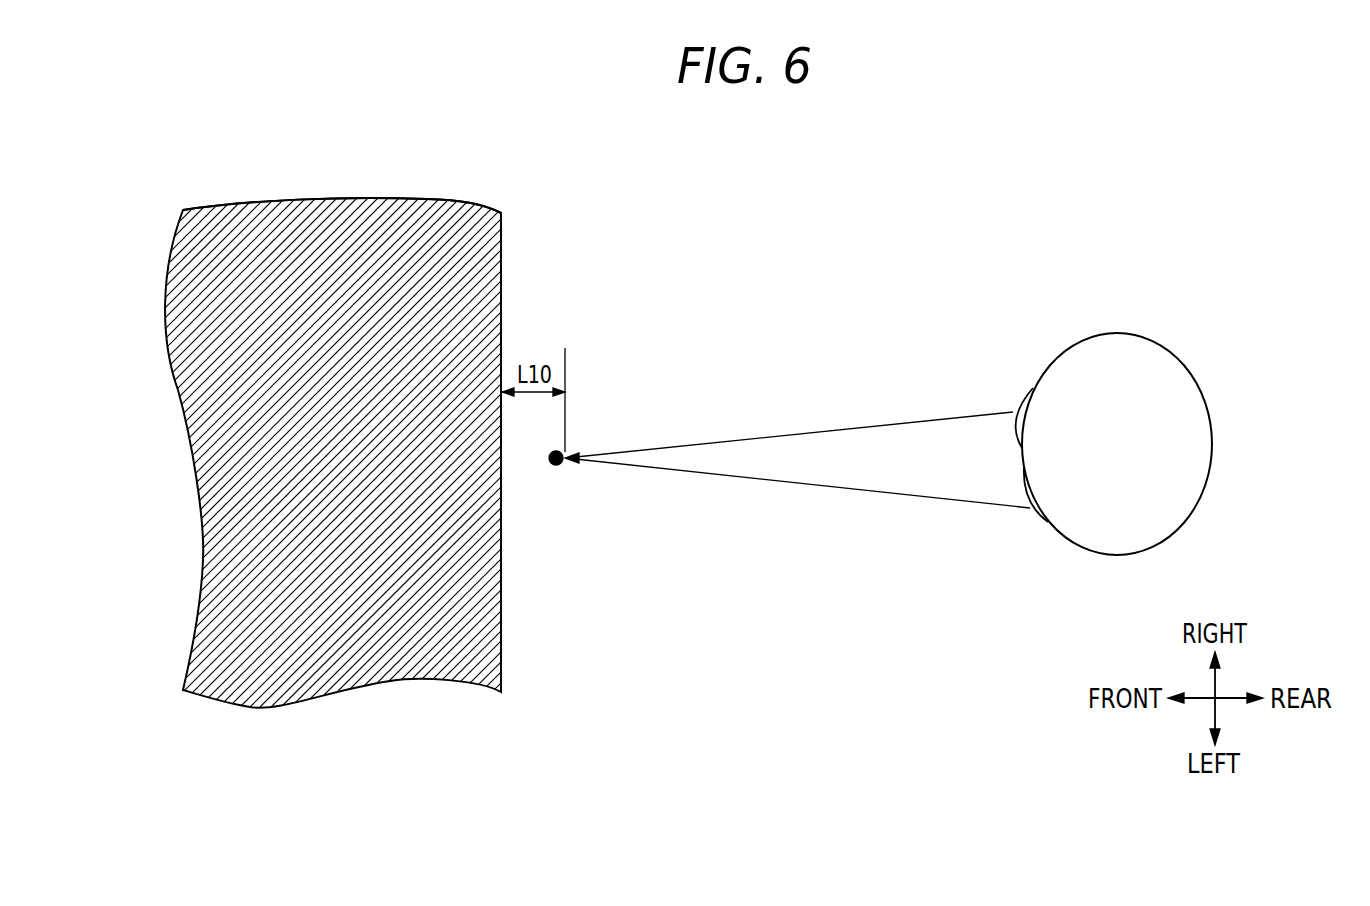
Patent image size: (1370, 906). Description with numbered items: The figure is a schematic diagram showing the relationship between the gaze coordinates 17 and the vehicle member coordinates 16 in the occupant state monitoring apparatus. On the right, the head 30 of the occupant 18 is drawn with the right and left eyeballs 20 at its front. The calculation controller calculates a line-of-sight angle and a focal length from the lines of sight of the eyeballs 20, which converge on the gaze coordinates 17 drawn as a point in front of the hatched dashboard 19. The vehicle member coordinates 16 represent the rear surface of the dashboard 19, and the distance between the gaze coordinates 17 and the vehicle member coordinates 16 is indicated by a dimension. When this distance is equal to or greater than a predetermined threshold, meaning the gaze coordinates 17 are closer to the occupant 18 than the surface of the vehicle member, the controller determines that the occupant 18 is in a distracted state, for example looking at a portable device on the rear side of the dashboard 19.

The vehicle member coordinates 16 is at (468, 202).
The dashboard 19 is at (392, 200).
The gaze coordinates 17 is at (554, 467).
The occupant 18 is at (1115, 333).
The head 30 is at (1117, 402).
The eyeballs 20 is at (1017, 393).